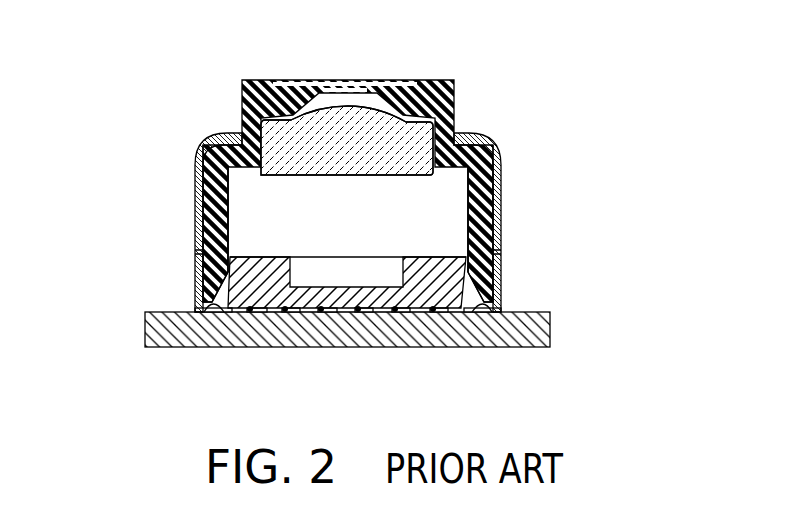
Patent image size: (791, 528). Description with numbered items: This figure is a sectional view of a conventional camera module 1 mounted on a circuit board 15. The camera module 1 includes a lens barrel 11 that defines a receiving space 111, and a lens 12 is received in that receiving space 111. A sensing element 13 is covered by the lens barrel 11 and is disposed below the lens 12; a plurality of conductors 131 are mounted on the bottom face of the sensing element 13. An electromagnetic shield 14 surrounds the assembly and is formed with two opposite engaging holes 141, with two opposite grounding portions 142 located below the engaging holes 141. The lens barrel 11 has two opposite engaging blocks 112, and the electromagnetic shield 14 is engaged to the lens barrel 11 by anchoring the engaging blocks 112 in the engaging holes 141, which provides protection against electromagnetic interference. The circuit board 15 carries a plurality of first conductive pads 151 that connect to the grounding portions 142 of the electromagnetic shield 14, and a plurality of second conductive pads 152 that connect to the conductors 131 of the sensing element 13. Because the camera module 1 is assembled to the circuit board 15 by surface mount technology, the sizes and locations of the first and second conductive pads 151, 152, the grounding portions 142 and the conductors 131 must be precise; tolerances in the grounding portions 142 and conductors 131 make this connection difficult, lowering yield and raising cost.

The camera module 1 is at (500, 78).
The lens barrel 11 is at (457, 118).
The receiving space 111 is at (458, 183).
The engaging blocks 112 is at (495, 232).
The lens 12 is at (407, 133).
The sensing element 13 is at (455, 270).
The conductors 131 is at (367, 315).
The electromagnetic shield 14 is at (498, 167).
The engaging holes 141 is at (495, 253).
The grounding portions 142 is at (495, 307).
The circuit board 15 is at (222, 328).
The first conductive pads 151 is at (215, 313).
The second conductive pads 152 is at (315, 315).